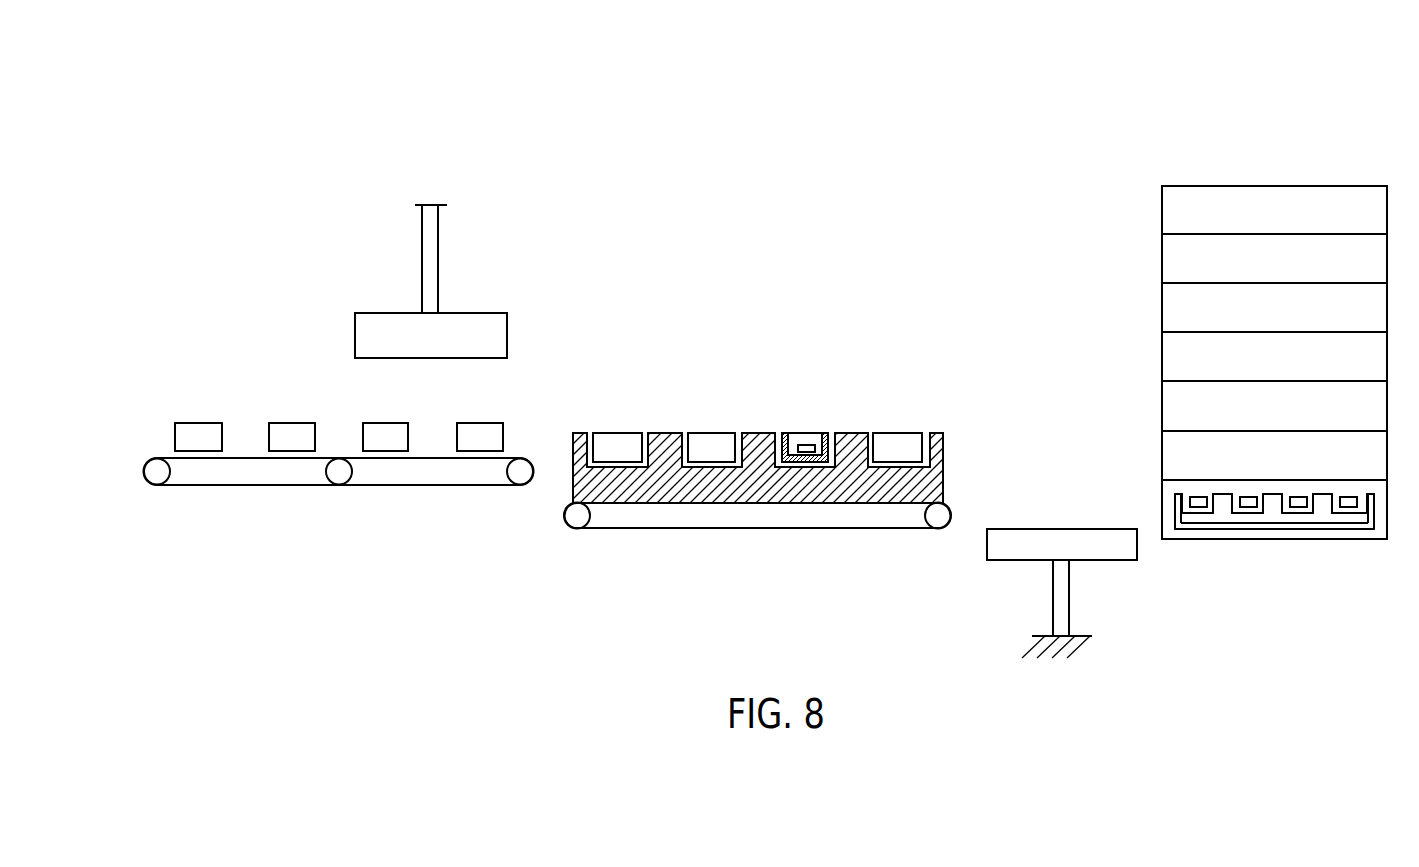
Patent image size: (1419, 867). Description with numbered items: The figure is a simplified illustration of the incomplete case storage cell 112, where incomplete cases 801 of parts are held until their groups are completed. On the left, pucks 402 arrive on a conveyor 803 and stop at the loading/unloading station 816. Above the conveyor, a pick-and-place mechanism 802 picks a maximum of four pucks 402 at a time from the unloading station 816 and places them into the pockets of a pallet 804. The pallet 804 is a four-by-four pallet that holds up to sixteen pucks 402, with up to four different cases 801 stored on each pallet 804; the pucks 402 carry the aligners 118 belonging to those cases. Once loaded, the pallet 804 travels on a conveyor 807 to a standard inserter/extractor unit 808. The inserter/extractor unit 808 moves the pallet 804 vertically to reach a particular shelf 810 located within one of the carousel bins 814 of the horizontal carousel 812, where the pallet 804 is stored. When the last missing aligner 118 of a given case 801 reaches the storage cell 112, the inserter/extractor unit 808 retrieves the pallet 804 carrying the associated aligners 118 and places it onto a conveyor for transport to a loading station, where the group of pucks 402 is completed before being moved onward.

The incomplete case storage cell 112 is at (1025, 143).
The aligner 118 is at (808, 448).
The puck 402 is at (192, 445).
The incomplete case 801 is at (143, 415).
The pick-and-place mechanism 802 is at (478, 313).
The conveyor 803 is at (503, 475).
The pallet 804 is at (580, 433).
The conveyor 807 is at (800, 528).
The inserter/extractor unit 808 is at (1062, 529).
The shelf 810 is at (1173, 234).
The horizontal carousel 812 is at (1236, 163).
The carousel bin 814 is at (1173, 298).
The unloading station 816 is at (650, 595).